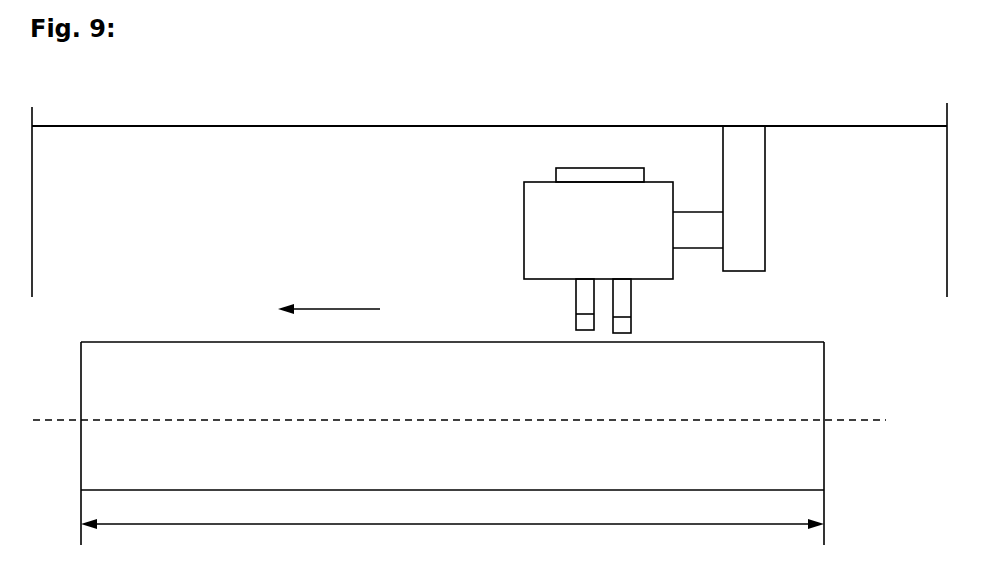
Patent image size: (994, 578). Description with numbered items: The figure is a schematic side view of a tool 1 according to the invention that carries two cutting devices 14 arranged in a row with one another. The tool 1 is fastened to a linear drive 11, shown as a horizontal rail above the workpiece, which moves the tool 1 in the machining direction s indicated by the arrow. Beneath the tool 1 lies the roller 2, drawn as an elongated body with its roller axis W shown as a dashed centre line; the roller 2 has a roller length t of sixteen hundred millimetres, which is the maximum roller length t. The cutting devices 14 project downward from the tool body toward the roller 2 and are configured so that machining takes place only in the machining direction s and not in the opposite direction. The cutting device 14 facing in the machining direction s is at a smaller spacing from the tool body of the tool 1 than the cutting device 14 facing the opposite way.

The tool 1 is at (524, 213).
The roller 2 is at (824, 370).
The linear drive 11 is at (860, 124).
The cutting devices 14 is at (576, 304).
The machining direction s is at (337, 310).
The roller axis W is at (862, 421).
The roller length t is at (690, 524).